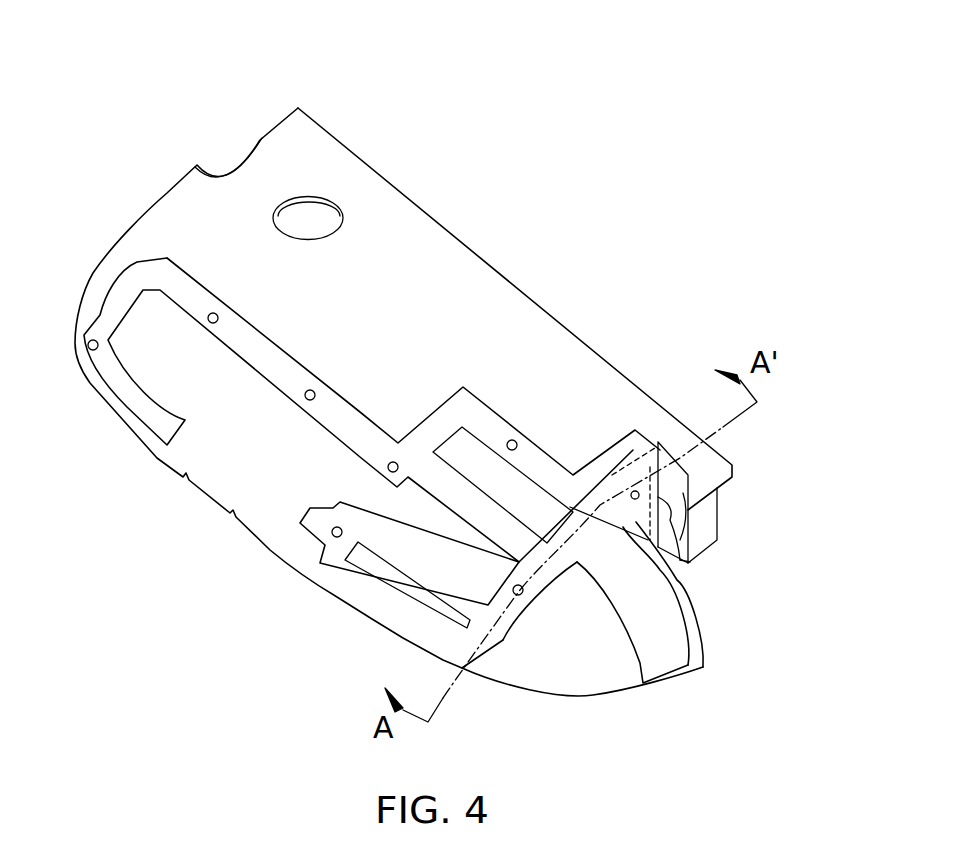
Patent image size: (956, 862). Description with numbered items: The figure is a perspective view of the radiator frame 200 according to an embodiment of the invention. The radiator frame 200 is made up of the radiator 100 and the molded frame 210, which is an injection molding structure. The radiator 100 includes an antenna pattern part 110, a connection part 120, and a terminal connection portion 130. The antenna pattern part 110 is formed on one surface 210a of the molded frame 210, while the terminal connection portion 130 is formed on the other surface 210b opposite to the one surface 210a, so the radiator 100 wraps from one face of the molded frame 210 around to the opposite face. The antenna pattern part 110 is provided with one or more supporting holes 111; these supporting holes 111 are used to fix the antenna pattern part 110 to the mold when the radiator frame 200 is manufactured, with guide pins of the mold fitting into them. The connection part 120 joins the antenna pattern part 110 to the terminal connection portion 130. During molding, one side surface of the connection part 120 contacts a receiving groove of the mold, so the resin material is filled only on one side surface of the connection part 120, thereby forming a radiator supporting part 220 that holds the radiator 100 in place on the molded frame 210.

The radiator frame 200 is at (599, 31).
The molded frame 210 is at (172, 197).
The one surface of the molded frame 210a is at (273, 140).
The other surface of the molded frame 210b is at (727, 486).
The radiator supporting part 220 is at (707, 517).
The terminal connection portion 130 is at (707, 547).
The connection part 120 is at (690, 560).
The radiator 100 is at (538, 610).
The antenna pattern part 110 is at (342, 427).
The supporting holes 111 is at (305, 395).